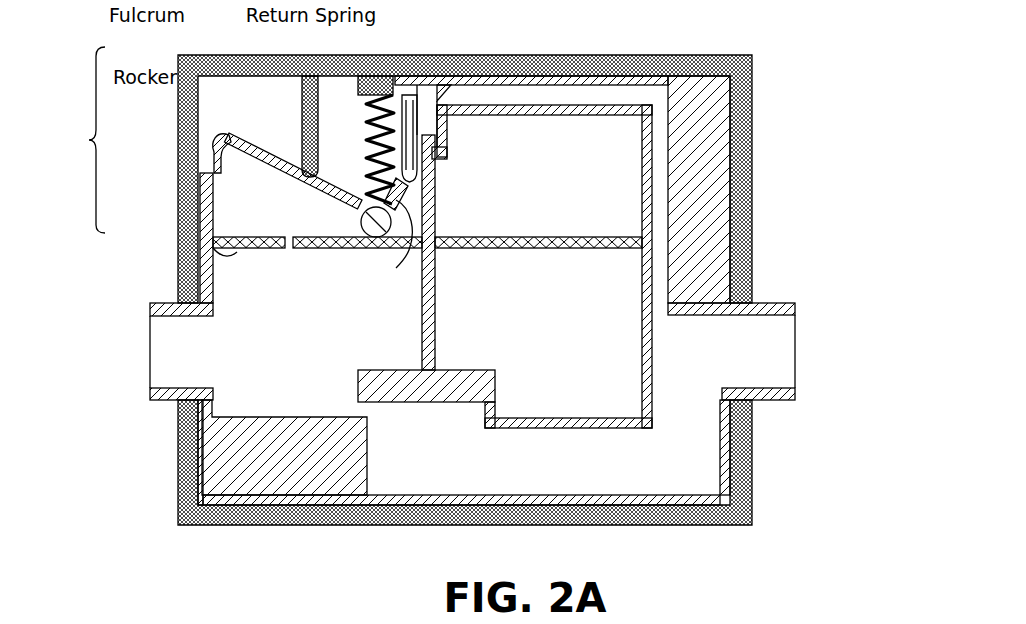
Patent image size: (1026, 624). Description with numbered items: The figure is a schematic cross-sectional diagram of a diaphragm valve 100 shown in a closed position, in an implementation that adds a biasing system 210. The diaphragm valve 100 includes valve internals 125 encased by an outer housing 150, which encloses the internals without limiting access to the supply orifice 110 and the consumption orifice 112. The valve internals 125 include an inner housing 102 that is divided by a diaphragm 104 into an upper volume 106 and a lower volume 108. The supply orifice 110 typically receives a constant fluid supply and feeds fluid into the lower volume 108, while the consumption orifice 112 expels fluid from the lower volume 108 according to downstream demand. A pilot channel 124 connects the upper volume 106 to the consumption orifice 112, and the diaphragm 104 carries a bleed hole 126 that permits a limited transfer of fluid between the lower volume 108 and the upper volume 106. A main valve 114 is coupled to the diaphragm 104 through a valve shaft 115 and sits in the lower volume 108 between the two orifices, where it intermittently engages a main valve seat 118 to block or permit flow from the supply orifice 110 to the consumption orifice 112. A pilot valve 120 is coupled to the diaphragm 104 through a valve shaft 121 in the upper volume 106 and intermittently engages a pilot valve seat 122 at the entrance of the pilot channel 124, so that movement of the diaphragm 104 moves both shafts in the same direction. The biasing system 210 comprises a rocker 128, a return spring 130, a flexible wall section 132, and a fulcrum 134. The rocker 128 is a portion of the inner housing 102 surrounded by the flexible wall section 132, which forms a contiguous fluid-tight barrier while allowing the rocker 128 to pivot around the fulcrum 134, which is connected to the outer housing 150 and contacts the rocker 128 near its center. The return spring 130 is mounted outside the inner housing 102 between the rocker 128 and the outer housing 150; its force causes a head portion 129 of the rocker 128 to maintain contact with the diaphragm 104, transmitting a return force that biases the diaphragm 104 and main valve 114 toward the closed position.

The diaphragm valve 100 is at (779, 53).
The inner housing 102 is at (722, 200).
The diaphragm 104 is at (190, 262).
The upper volume 106 is at (599, 202).
The lower volume 108 is at (318, 328).
The supply orifice 110 is at (151, 357).
The consumption orifice 112 is at (795, 362).
The main valve 114 is at (367, 385).
The valve shaft 115 is at (435, 335).
The main valve seat 118 is at (484, 403).
The pilot valve 120 is at (447, 152).
The valve shaft 121 is at (435, 203).
The pilot valve seat 122 is at (438, 97).
The pilot channel 124 is at (565, 88).
The valve internals 125 is at (221, 514).
The bleed hole 126 is at (286, 246).
The rocker portion 128 is at (267, 147).
The head portion 129 is at (360, 223).
The return spring 130 is at (363, 113).
The flexible wall section 132 is at (216, 150).
The fulcrum 134 is at (300, 143).
The outer housing 150 is at (490, 303).
The biasing system 210 is at (78, 140).